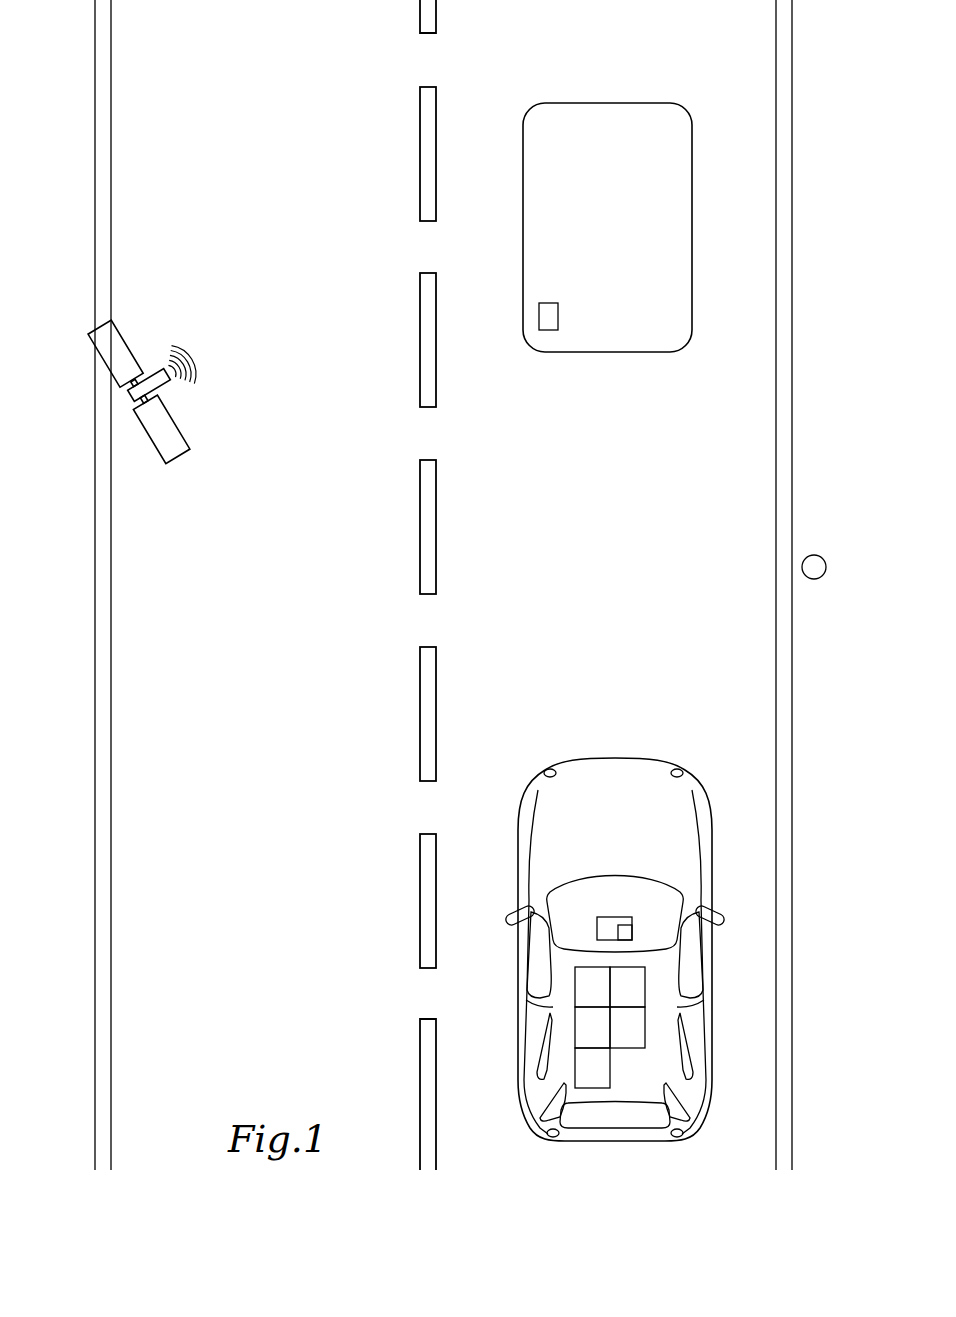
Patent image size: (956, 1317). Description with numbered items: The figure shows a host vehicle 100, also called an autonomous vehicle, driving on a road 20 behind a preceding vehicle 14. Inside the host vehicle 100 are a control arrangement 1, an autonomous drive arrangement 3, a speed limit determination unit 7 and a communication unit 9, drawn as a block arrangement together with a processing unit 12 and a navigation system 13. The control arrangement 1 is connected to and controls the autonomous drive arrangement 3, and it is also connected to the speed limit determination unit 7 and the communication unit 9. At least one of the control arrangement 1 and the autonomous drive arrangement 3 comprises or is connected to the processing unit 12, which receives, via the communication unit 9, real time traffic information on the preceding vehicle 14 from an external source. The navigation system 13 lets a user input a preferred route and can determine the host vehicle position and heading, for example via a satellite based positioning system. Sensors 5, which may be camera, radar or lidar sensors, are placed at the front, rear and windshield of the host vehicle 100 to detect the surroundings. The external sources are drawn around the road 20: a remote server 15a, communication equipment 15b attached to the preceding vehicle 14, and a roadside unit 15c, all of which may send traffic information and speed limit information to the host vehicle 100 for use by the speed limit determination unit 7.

The control arrangement 1 is at (583, 994).
The autonomous drive arrangement 3 is at (616, 994).
The sensors 5 is at (553, 777).
The speed limit determination unit 7 is at (603, 930).
The communication unit 9 is at (583, 1040).
The processing unit 12 is at (615, 1040).
The navigation system 13 is at (577, 1081).
The preceding vehicle 14 is at (693, 78).
The remote server 15a is at (170, 392).
The communication equipment 15b is at (546, 319).
The roadside unit 15c is at (814, 562).
The road 20 is at (103, 993).
The host vehicle 100 is at (688, 728).